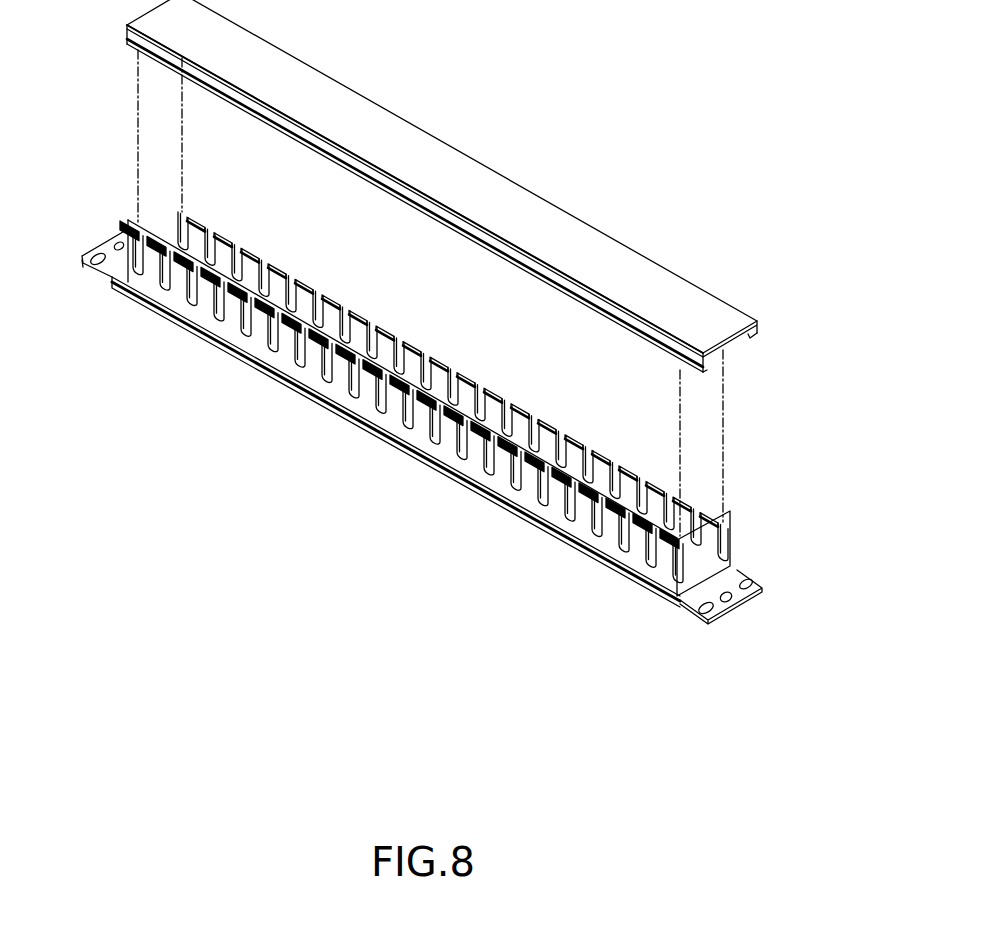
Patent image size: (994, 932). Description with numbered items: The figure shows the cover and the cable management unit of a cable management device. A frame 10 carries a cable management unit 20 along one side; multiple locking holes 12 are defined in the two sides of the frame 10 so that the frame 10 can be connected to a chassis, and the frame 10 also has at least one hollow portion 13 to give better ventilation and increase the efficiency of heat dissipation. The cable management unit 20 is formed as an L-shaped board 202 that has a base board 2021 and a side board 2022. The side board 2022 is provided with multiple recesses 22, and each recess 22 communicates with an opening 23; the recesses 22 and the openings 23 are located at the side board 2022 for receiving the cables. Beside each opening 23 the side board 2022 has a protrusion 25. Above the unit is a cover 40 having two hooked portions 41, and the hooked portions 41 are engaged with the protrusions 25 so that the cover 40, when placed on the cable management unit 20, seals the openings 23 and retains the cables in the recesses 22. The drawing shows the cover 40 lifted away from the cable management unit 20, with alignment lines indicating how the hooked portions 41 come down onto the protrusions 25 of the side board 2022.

The frame 10 is at (446, 464).
The locking holes 12 is at (728, 603).
The hollow portion 13 is at (446, 451).
The cable management unit 20 is at (448, 323).
The recesses 22 is at (267, 338).
The opening 23 is at (430, 393).
The protrusion 25 is at (268, 260).
The cover 40 is at (471, 186).
The hooked portions 41 is at (756, 336).
The L-shaped board 202 is at (461, 408).
The base board 2021 is at (717, 567).
The side board 2022 is at (483, 473).